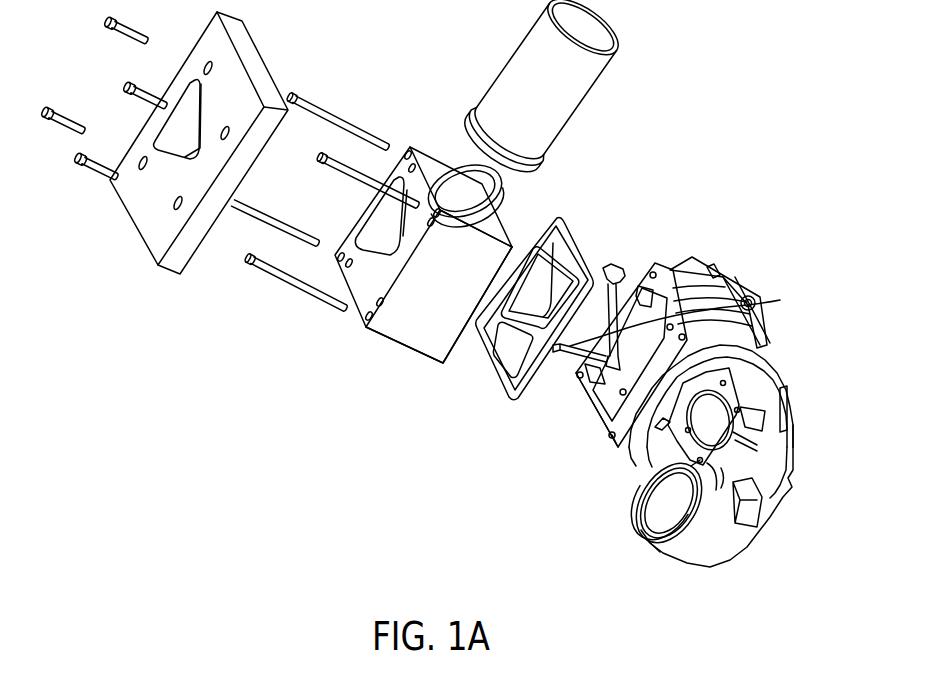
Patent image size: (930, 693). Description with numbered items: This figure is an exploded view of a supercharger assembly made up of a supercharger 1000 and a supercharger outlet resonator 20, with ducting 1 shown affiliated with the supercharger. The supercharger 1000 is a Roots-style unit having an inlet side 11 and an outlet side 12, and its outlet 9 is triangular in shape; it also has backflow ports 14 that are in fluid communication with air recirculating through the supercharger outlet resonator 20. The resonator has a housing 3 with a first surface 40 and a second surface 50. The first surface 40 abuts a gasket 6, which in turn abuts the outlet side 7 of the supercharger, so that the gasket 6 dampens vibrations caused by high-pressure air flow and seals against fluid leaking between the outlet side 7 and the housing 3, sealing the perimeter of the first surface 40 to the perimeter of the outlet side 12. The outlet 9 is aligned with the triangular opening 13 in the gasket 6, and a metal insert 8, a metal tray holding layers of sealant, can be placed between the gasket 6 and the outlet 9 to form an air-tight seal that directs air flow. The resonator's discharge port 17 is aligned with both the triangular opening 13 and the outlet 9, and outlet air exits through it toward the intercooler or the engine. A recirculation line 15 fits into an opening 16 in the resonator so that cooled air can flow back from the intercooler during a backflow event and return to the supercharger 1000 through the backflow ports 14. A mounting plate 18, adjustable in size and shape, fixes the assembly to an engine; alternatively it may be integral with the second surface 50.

The ducting 1 is at (716, 429).
The housing 3 is at (512, 247).
The gasket 6 is at (535, 324).
The outlet side 7 is at (628, 380).
The metal insert 8 is at (621, 268).
The outlet 9 is at (667, 262).
The inlet side 11 is at (762, 365).
The outlet side 12 is at (617, 441).
The triangular opening 13 is at (533, 290).
The backflow ports 14 is at (753, 310).
The recirculation line 15 is at (515, 61).
The opening 16 is at (465, 187).
The discharge port 17 is at (380, 223).
The mounting plate 18 is at (137, 207).
The supercharger outlet resonator 20 is at (417, 263).
The first surface 40 is at (457, 341).
The second surface 50 is at (357, 279).
The supercharger 1000 is at (788, 395).